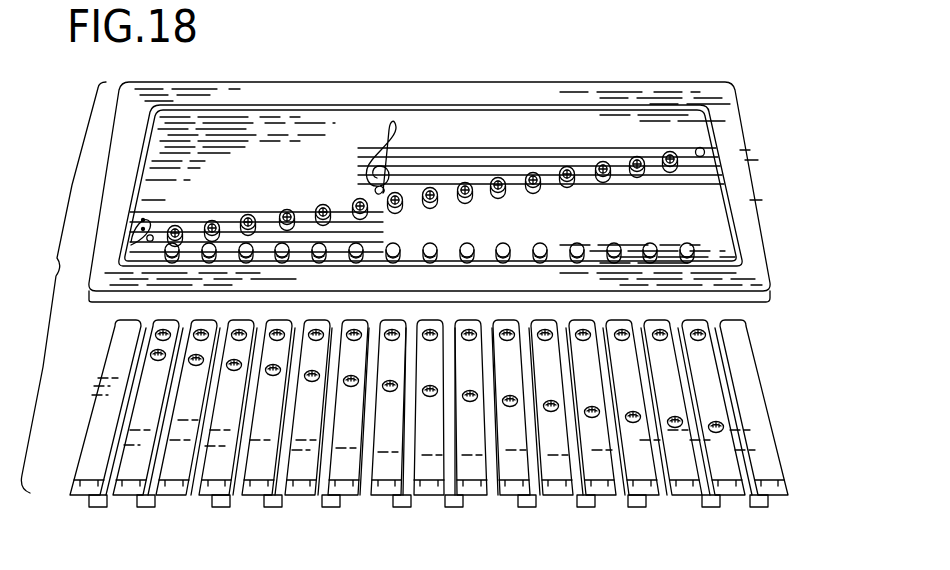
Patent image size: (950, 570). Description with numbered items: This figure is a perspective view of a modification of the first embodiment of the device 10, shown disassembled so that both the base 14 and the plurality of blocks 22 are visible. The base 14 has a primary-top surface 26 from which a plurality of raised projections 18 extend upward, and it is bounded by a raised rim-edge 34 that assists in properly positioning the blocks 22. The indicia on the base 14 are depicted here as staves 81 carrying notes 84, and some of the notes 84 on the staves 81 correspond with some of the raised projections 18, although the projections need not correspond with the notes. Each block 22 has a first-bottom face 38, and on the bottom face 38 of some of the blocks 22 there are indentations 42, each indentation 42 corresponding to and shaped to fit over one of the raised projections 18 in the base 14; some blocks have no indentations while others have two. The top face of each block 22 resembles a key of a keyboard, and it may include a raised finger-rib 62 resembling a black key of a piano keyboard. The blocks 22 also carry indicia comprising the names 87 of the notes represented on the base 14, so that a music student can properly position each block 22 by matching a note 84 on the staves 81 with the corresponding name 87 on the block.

The device 10 is at (53, 266).
The base 14 is at (768, 236).
The raised projections 18 is at (469, 244).
The blocks 22 is at (353, 497).
The primary-top surface 26 is at (226, 126).
The raised rim-edge 34 is at (580, 85).
The first-bottom face 38 is at (262, 481).
The indentations 42 is at (690, 466).
The raised finger-rib 62 is at (100, 508).
The staves 81 is at (333, 152).
The notes 84 is at (641, 157).
The names 87 is at (147, 381).